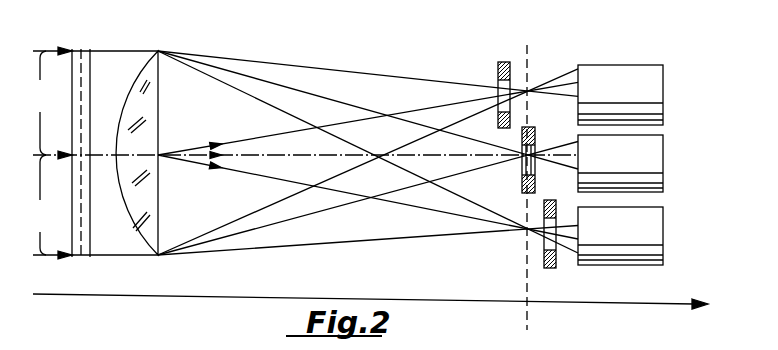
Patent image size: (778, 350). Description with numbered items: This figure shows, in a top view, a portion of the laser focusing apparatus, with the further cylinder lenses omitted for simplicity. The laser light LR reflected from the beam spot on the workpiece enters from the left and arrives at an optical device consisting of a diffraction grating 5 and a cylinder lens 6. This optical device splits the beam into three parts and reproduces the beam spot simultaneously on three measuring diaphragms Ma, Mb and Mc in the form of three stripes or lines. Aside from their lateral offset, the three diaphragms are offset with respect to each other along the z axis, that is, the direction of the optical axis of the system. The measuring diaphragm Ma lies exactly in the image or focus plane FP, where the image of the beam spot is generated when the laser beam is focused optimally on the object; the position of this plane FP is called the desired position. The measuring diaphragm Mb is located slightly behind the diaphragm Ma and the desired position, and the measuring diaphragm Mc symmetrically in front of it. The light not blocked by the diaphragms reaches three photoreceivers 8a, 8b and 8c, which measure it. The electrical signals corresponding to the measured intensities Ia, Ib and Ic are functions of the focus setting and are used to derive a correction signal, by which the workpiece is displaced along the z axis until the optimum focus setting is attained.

The diffraction grating 5 is at (95, 72).
The cylinder lens 6 is at (138, 75).
The reflected laser light LR is at (44, 153).
The measuring diaphragm Mc is at (500, 65).
The measuring diaphragm Ma is at (522, 190).
The measuring diaphragm Mb is at (554, 259).
The image or focus plane FP is at (526, 272).
The photoreceiver 8c is at (650, 89).
The photoreceiver 8a is at (650, 159).
The photoreceiver 8b is at (650, 230).
The intensity signal Ic is at (663, 117).
The intensity signal Ia is at (663, 182).
The intensity signal Ib is at (663, 256).
The z axis z is at (370, 310).